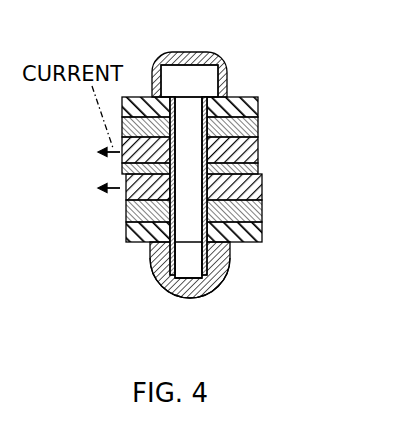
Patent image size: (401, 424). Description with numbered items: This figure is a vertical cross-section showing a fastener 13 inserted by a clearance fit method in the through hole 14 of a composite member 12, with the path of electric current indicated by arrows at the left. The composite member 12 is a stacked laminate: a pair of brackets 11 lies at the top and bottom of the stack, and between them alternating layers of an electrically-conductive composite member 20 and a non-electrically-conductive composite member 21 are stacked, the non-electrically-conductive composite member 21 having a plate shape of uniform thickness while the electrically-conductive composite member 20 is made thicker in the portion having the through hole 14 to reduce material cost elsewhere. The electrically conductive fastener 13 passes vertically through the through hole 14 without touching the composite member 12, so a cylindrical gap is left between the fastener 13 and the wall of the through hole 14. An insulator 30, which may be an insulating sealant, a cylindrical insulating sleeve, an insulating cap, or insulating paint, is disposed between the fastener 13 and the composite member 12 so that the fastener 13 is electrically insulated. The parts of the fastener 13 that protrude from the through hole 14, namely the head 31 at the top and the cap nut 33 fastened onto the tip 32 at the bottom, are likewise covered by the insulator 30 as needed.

The bracket 11 is at (259, 108).
The composite member 12 is at (237, 172).
The fastener 13 is at (186, 207).
The through hole 14 is at (190, 125).
The electrically-conductive composite member 20 is at (260, 152).
The non-electrically-conductive composite member 21 is at (262, 131).
The insulator 30 is at (160, 58).
The head 31 is at (212, 90).
The tip 32 is at (187, 268).
The cap nut 33 is at (213, 297).